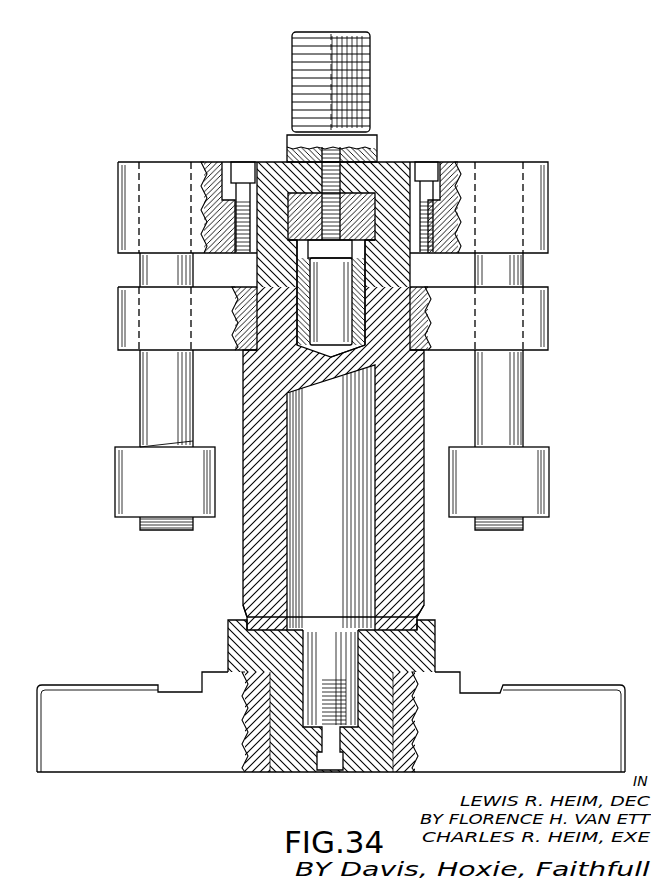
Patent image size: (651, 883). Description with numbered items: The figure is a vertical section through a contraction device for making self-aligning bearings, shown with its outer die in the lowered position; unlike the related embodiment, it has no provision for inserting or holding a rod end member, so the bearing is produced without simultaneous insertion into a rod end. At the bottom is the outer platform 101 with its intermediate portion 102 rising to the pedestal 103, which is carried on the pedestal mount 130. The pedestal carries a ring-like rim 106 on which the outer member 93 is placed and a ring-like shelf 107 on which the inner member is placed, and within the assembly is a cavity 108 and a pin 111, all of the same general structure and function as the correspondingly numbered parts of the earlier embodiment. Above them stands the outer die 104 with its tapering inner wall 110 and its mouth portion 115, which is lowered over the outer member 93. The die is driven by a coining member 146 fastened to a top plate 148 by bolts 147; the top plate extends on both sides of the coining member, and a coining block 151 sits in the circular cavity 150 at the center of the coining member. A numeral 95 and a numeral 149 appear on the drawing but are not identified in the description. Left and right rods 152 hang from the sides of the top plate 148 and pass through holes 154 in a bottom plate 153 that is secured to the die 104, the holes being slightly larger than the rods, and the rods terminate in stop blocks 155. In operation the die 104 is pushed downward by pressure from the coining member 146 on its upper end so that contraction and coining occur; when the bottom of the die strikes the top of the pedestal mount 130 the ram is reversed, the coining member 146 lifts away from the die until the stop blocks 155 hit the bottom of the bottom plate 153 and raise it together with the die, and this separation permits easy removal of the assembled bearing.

The nut 95 is at (306, 240).
The outer member 93 is at (284, 286).
The outer platform 101 is at (136, 772).
The intermediate portion 102 is at (176, 691).
The pedestal 103 is at (308, 729).
The outer die 104 is at (243, 572).
The ring-like rim 106 is at (368, 269).
The ring-like shelf 107 is at (364, 290).
The cavity 108 is at (313, 344).
The tapering inner wall 110 is at (404, 567).
The pin 111 is at (360, 344).
The mouth portion 115 is at (242, 612).
The pedestal mount 130 is at (368, 765).
The coining member 146 is at (267, 162).
The bolts 147 is at (433, 165).
The top plate 148 is at (536, 162).
The bolt 149 is at (139, 208).
The circular cavity 150 is at (375, 197).
The coining block 151 is at (345, 193).
The rods 152 is at (140, 268).
The bottom plate 153 is at (548, 341).
The holes 154 is at (139, 317).
The stop blocks 155 is at (115, 483).